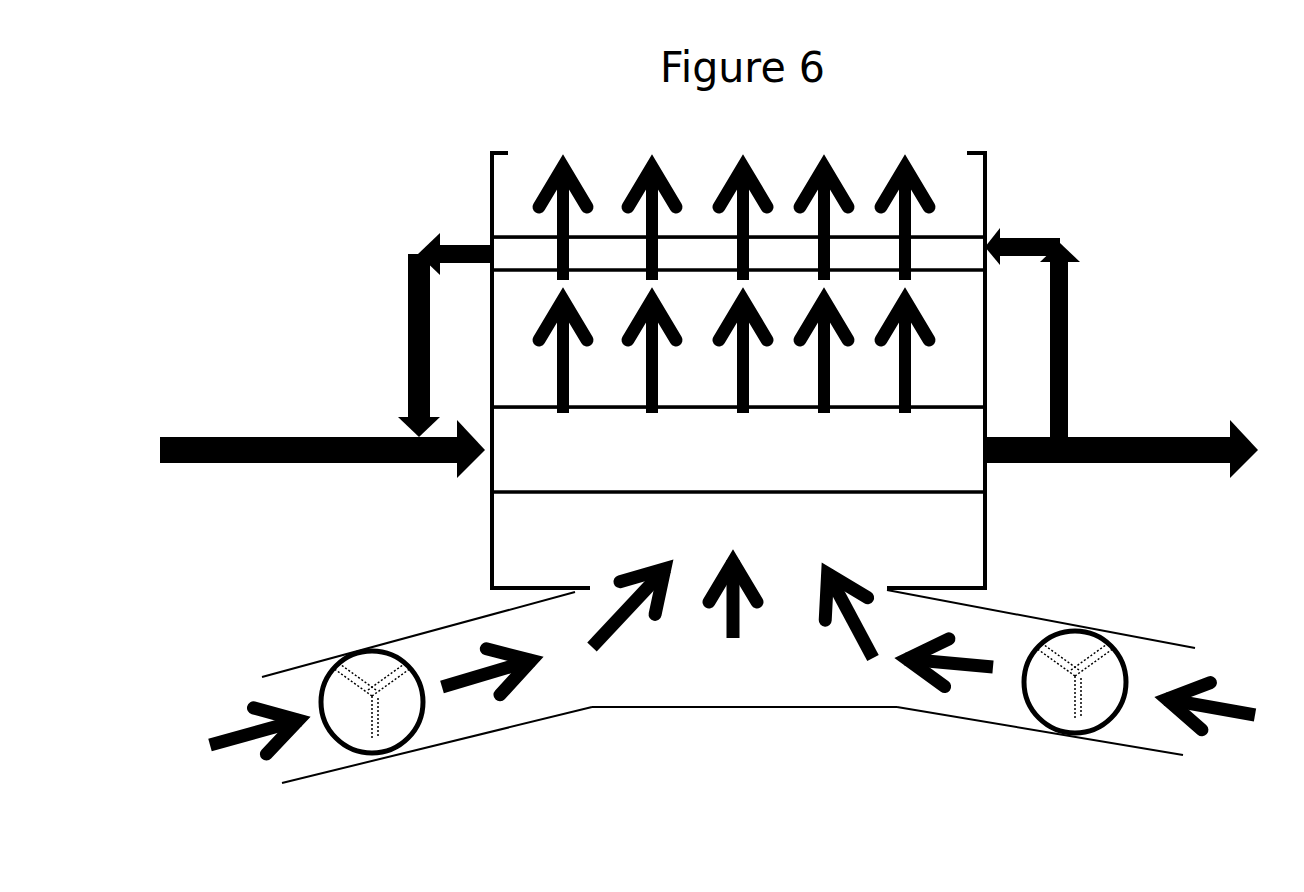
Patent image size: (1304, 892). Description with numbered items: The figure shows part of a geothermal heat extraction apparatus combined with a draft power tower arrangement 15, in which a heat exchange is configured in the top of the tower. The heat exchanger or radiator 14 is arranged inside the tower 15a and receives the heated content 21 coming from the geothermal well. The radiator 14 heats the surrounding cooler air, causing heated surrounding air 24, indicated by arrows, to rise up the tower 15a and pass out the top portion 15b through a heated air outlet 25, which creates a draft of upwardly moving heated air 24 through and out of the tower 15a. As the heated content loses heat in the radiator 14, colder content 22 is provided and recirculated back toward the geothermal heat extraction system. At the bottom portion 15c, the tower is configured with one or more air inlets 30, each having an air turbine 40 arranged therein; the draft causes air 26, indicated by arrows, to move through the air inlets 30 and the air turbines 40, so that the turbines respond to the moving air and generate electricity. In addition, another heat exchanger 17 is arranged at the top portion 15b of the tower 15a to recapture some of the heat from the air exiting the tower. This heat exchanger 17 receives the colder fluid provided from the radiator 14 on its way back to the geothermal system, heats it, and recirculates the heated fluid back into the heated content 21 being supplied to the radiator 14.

The heat exchanger or radiator 14 is at (728, 465).
The draft power tower arrangement 15 is at (990, 199).
The tower 15a is at (492, 222).
The top portion 15b is at (505, 152).
The bottom portion 15c is at (492, 542).
The heat exchanger 17 is at (756, 262).
The heated content 21 is at (327, 355).
The colder content 22 is at (1121, 353).
The heated surrounding air 24 is at (750, 367).
The heated air outlet 25 is at (880, 155).
The air 26 is at (246, 742).
The air inlet 30 is at (270, 690).
The air turbine 40 is at (398, 753).